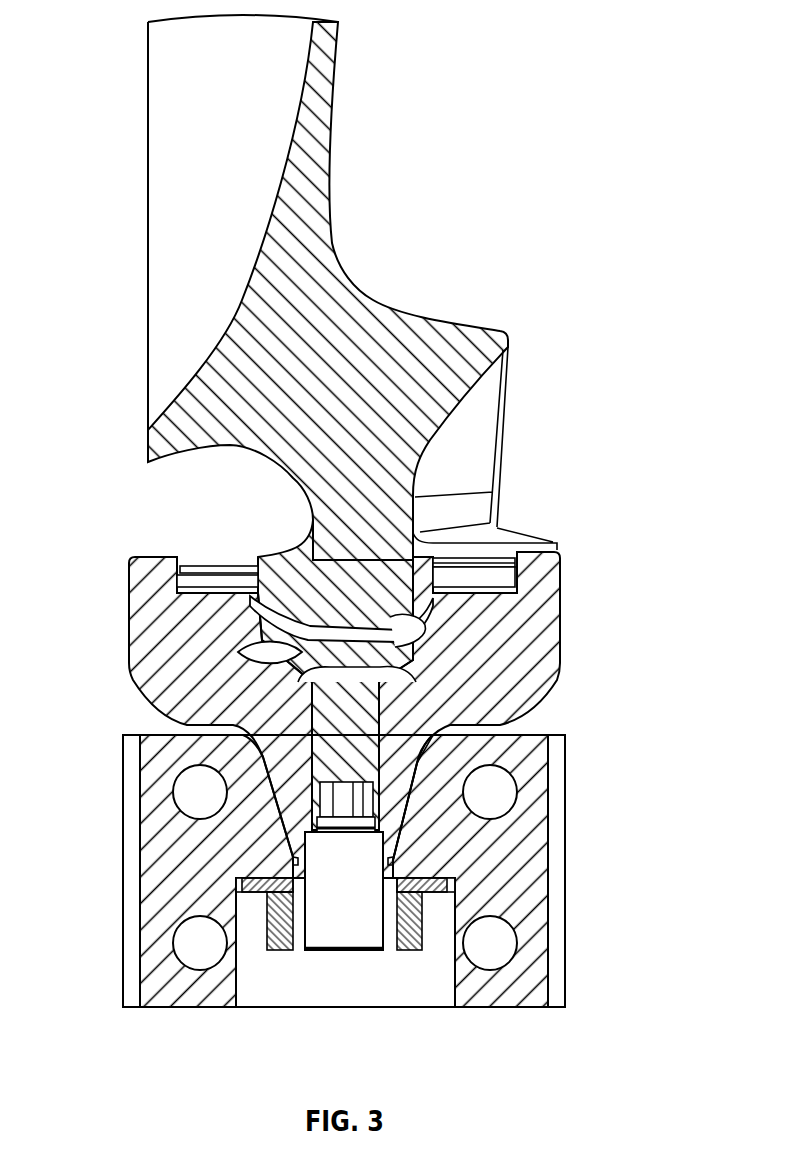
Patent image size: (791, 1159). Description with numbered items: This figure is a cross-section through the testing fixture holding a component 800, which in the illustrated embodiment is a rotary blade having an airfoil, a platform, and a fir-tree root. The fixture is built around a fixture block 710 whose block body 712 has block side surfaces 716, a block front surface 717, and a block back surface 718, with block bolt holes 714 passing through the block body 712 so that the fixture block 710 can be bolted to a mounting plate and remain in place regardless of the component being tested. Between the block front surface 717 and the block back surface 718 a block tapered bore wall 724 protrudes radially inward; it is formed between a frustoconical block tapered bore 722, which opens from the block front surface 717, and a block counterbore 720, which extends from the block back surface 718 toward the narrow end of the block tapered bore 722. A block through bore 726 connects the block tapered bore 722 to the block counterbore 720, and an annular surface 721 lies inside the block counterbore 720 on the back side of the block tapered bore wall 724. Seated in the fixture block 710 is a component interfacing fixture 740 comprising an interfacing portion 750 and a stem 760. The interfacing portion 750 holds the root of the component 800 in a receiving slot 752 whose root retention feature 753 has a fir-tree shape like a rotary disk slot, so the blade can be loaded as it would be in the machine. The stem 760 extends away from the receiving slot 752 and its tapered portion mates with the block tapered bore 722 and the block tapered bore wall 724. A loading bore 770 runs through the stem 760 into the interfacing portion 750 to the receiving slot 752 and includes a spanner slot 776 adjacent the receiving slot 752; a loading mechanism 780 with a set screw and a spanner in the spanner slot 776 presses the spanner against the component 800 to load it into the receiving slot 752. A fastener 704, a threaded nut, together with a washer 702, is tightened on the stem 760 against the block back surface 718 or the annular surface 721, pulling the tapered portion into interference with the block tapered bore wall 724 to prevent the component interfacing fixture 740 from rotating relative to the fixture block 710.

The component 800 is at (481, 276).
The component interfacing fixture 740 is at (585, 635).
The interfacing portion 750 is at (550, 583).
The receiving slot 752 is at (463, 610).
The root retention feature 753 is at (195, 572).
The spanner slot 776 is at (250, 665).
The loading mechanism 780 is at (407, 662).
The fixture block 710 is at (107, 727).
The block body 712 is at (533, 840).
The block side surfaces 716 is at (133, 863).
The block back surface 718 is at (197, 1014).
The block counterbore 720 is at (410, 990).
The annular surface 721 is at (428, 897).
The block tapered bore 722 is at (265, 773).
The block tapered bore wall 724 is at (418, 785).
The block bolt holes 714 is at (488, 958).
The block through bore 726 is at (287, 862).
The stem 760 is at (397, 862).
The block front surface 717 is at (543, 728).
The washer 702 is at (270, 951).
The fastener 704 is at (287, 951).
The loading bore 770 is at (343, 930).